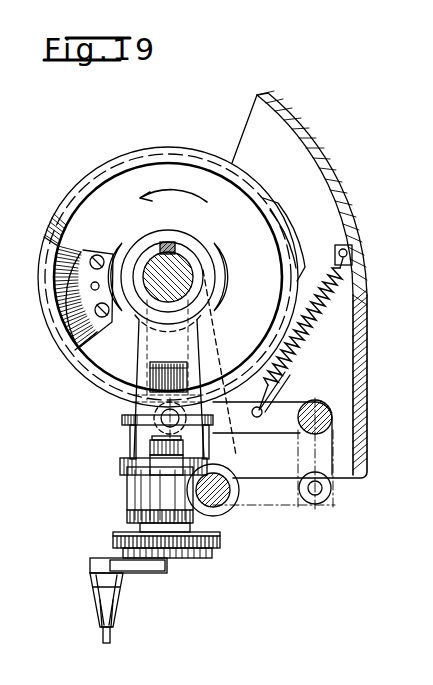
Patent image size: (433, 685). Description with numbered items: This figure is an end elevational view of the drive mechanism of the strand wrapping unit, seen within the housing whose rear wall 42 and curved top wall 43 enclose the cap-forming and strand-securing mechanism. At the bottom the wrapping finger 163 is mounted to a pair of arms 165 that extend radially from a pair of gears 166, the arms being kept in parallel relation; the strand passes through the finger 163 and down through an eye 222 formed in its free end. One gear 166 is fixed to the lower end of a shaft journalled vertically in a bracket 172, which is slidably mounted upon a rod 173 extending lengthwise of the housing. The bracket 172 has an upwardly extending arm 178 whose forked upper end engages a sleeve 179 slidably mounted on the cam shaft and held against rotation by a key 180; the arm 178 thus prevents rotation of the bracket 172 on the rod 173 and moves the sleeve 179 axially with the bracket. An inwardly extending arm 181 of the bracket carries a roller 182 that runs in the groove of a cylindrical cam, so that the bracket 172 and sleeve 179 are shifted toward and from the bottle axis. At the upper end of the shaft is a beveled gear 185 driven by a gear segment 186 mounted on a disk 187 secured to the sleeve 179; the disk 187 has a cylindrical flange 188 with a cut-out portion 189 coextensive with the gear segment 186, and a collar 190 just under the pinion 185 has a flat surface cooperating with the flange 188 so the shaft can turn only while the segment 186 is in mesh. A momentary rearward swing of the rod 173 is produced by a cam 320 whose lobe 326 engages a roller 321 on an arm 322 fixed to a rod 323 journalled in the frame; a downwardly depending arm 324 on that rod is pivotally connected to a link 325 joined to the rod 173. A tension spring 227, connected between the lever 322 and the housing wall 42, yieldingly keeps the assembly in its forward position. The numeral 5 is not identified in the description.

The needle 5 is at (113, 638).
The rear wall 42 is at (372, 366).
The curved top wall 43 is at (276, 112).
The wrapping finger 163 is at (122, 585).
The arms 165 is at (162, 568).
The gears 166 is at (221, 541).
The bracket 172 is at (127, 489).
The rod 173 is at (224, 507).
The upwardly extending arm 178 is at (223, 281).
The sleeve 179 is at (203, 248).
The key 180 is at (173, 243).
The inwardly extending arm 181 is at (122, 470).
The roller 182 is at (150, 448).
The beveled gear 185 is at (185, 364).
The gear segment 186 is at (72, 248).
The disk 187 is at (173, 187).
The cylindrical flange 188 is at (81, 361).
The cut-out portion 189 is at (48, 288).
The collar 190 is at (235, 405).
The eye 222 is at (117, 619).
The tension spring 227 is at (321, 324).
The cam 320 is at (247, 180).
The roller 321 is at (125, 441).
The arm 322 is at (281, 409).
The rod 323 is at (321, 405).
The downwardly depending arm 324 is at (302, 449).
The link 325 is at (308, 496).
The lobe 326 is at (297, 240).